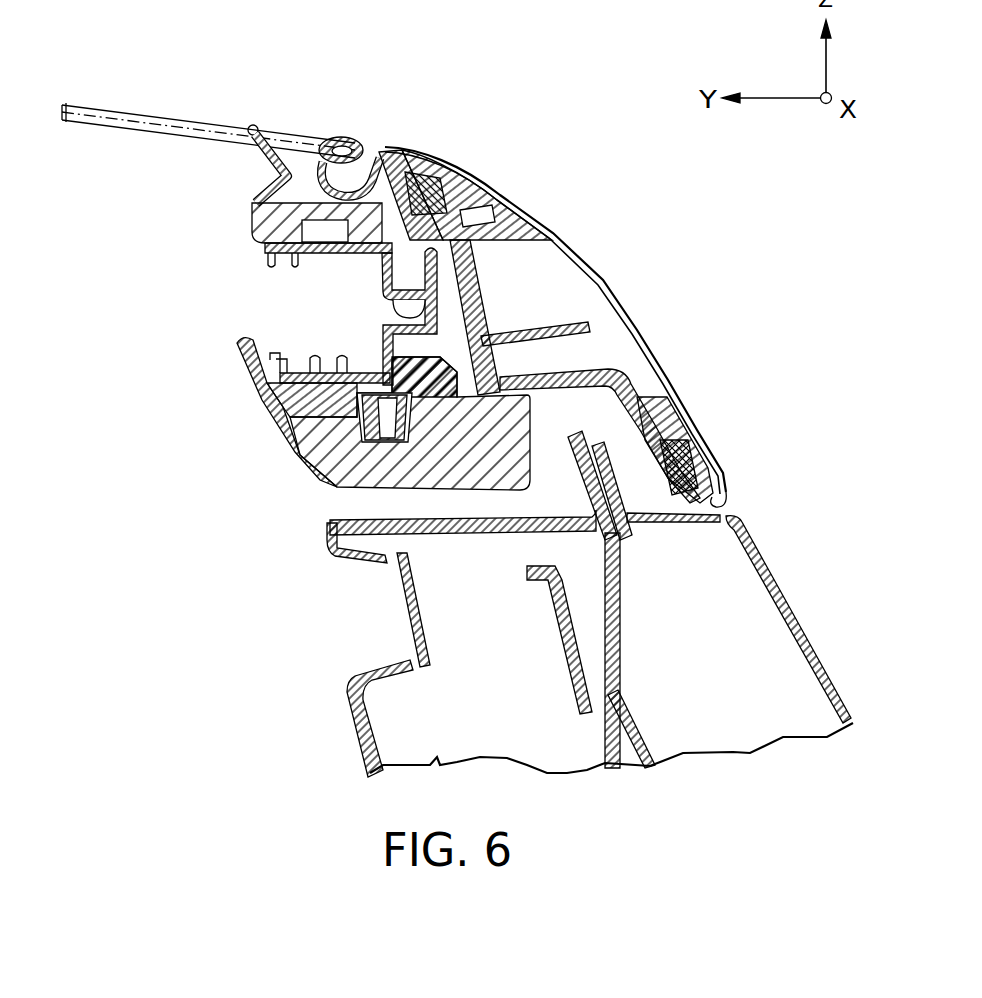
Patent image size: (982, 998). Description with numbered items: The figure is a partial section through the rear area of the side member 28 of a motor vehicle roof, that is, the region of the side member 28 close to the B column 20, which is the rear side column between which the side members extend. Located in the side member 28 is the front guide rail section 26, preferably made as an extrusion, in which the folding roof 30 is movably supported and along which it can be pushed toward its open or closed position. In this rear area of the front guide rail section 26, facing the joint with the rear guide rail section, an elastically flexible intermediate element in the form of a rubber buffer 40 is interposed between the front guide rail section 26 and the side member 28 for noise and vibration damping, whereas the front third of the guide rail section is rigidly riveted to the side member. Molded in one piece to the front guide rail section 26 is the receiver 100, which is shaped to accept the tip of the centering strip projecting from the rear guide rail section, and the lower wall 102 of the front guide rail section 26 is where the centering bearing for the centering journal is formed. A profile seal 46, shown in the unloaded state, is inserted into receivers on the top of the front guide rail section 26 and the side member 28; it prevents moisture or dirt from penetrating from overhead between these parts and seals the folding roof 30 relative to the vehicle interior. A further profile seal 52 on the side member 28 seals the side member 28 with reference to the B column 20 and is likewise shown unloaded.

The B column 20 is at (530, 705).
The front guide rail section 26 is at (262, 259).
The side member 28 is at (340, 487).
The folding roof 30 is at (151, 118).
The rubber buffer 40 is at (272, 413).
The profile seal 46 is at (386, 140).
The profile seal 52 is at (748, 491).
The receiver 100 is at (556, 240).
The lower wall 102 is at (338, 380).